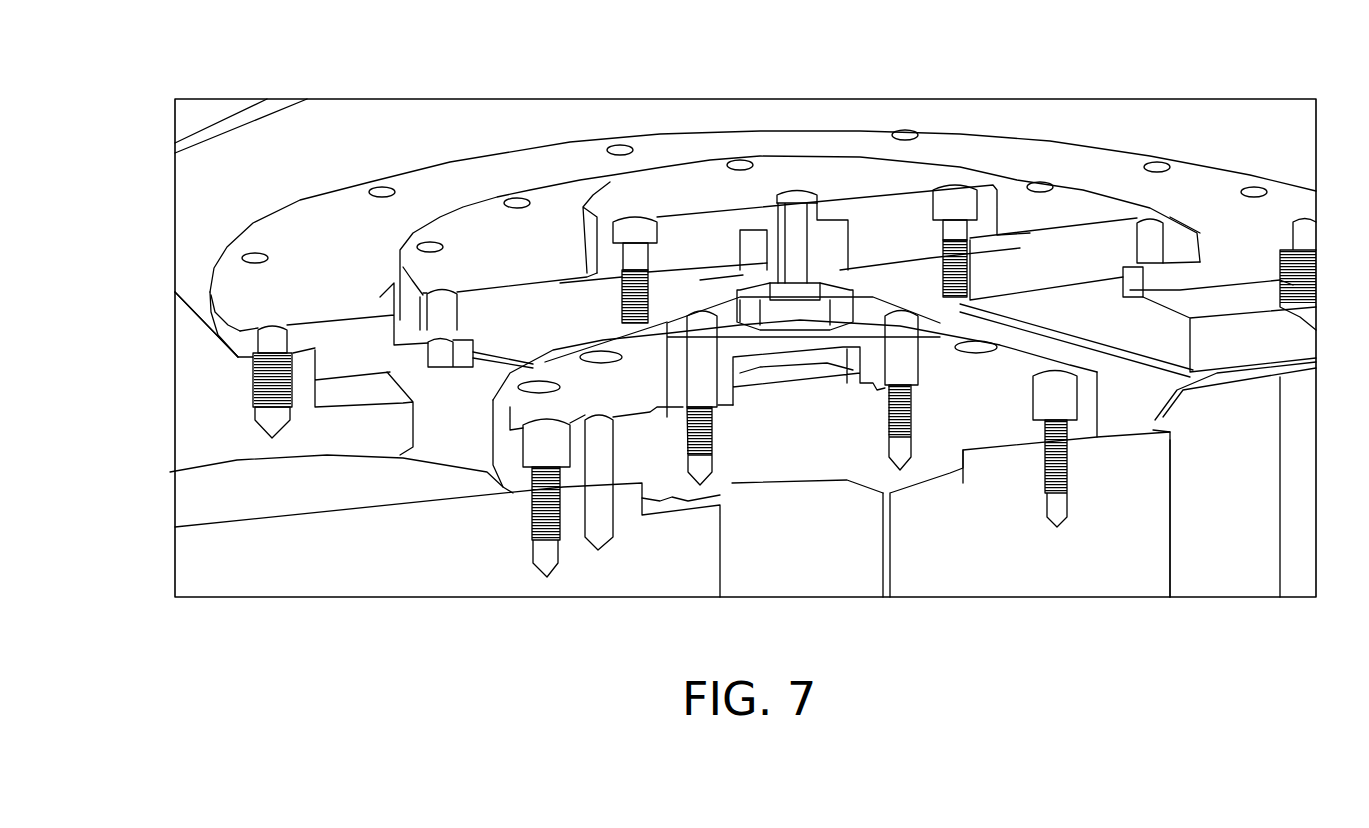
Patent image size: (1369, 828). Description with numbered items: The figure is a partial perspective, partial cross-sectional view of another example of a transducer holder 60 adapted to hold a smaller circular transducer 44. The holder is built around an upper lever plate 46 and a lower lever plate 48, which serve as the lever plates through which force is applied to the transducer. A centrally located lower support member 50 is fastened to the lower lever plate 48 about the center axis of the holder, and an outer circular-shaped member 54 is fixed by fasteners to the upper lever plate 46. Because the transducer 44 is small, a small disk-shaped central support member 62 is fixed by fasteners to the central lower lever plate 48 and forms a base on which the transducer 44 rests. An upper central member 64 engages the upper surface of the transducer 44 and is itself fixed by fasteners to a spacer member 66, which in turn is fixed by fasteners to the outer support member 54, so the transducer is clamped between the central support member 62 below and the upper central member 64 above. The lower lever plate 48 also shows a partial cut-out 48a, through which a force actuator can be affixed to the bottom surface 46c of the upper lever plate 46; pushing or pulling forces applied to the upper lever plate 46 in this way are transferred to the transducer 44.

The circular transducer 44 is at (757, 300).
The upper lever plate 46 is at (1230, 344).
The bottom surface of the upper lever plate 46c is at (1210, 370).
The lower lever plate 48 is at (1303, 463).
The cut-out 48a is at (1247, 538).
The lower support member 50 is at (313, 457).
The outer circular-shaped member 54 is at (253, 278).
The transducer holder 60 is at (162, 370).
The disk-shaped central support member 62 is at (875, 377).
The upper central member 64 is at (893, 215).
The spacer member 66 is at (512, 245).